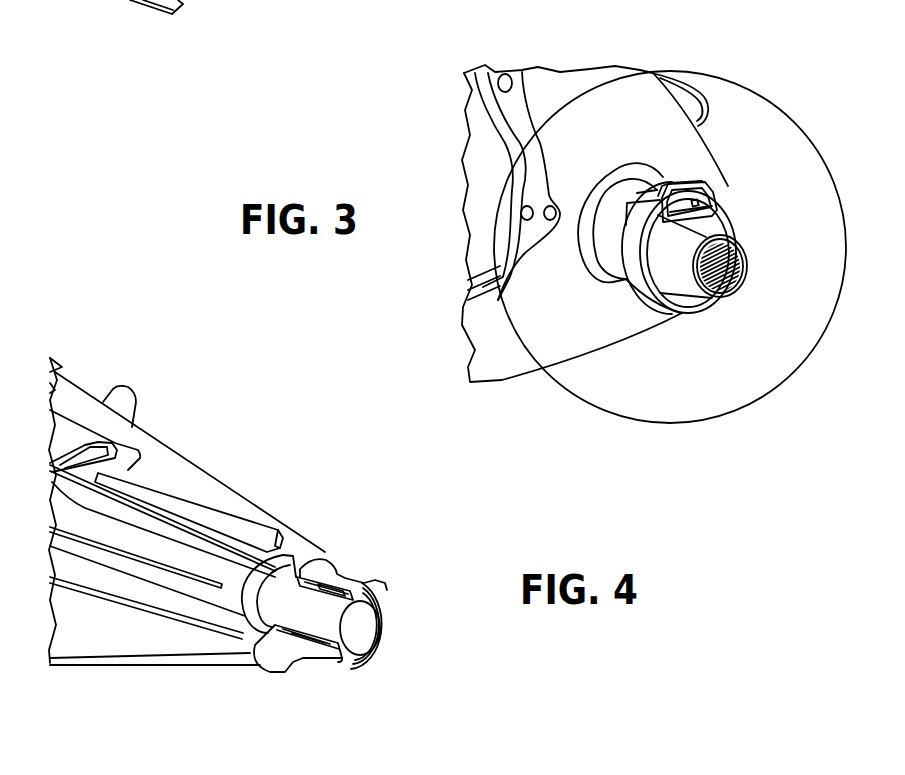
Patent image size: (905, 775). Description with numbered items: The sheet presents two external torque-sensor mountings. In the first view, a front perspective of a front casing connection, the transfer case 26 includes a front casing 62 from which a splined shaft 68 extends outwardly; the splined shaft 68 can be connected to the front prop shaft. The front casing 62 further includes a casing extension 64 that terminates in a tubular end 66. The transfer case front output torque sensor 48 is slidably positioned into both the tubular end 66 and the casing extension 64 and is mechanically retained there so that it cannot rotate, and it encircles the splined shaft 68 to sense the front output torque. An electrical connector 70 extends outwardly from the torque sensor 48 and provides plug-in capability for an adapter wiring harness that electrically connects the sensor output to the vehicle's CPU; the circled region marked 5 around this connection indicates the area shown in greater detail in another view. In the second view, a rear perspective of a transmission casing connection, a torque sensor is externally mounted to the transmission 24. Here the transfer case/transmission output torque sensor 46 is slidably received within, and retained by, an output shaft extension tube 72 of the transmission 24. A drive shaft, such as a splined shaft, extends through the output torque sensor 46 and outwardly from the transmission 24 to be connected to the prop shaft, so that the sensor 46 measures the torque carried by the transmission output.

In FIG. 3, the detail circle (FIG. 5 indication) 5 is at (748, 88).
In FIG. 3, the transfer case 26 is at (549, 57).
In FIG. 3, the front casing 62 is at (641, 95).
In FIG. 3, the casing extension 64 is at (613, 265).
In FIG. 3, the tubular end 66 is at (672, 313).
In FIG. 3, the splined shaft 68 is at (748, 270).
In FIG. 3, the electrical connector 70 is at (728, 203).
In FIG. 3, the transfer case front output torque sensor 48 is at (664, 183).
In FIG. 4, the transmission 24 is at (160, 431).
In FIG. 4, the transfer case/transmission output torque sensor 46 is at (348, 579).
In FIG. 4, the output shaft extension tube 72 is at (313, 654).